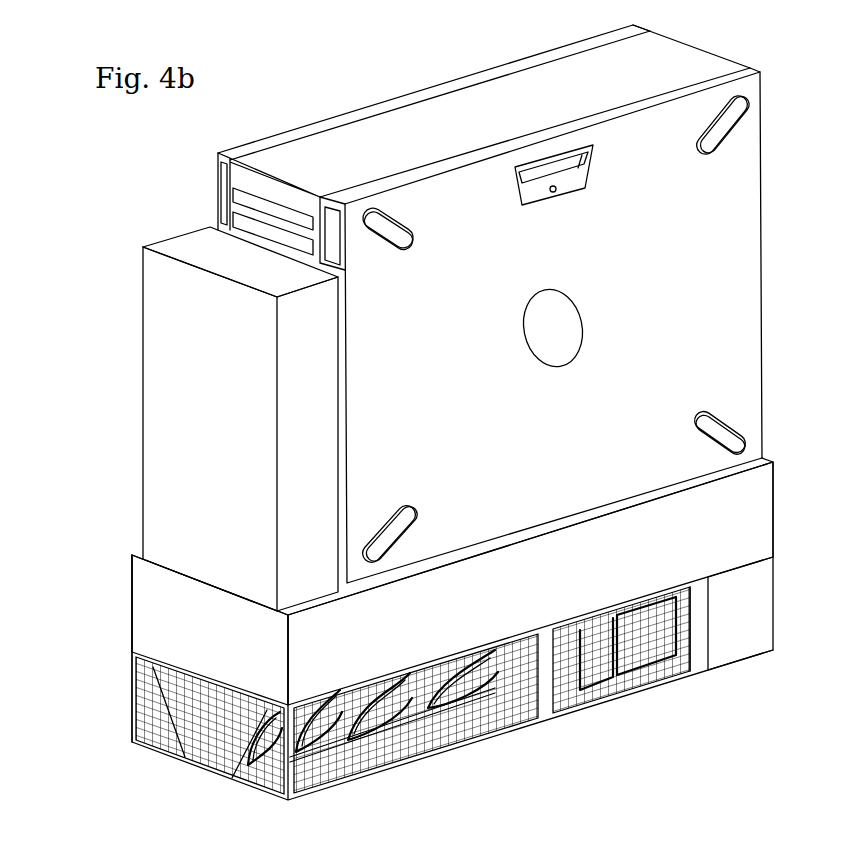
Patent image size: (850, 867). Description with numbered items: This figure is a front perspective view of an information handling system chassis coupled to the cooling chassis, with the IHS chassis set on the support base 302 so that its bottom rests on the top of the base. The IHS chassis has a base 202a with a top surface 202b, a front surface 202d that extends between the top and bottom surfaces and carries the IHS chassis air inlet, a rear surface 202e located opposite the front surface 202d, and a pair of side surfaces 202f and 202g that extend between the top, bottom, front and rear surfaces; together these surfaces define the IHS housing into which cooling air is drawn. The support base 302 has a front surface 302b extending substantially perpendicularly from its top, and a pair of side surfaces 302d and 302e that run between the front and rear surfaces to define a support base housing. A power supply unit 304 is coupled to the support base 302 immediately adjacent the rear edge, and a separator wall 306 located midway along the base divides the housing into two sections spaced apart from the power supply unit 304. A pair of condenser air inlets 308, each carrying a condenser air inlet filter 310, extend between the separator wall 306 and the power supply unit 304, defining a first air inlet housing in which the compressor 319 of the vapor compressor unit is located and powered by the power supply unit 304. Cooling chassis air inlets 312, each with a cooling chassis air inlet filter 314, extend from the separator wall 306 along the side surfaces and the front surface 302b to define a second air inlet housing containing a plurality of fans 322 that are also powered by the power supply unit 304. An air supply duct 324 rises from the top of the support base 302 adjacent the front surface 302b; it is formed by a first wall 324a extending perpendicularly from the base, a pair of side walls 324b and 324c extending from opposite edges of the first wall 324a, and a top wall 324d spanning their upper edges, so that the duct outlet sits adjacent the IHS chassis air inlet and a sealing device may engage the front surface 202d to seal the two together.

The base 202a is at (770, 160).
The top surface 202b is at (430, 115).
The front surface 202d is at (237, 180).
The rear surface 202e is at (764, 247).
The side surface 202f is at (758, 392).
The side surface 202g is at (326, 120).
The support base 302 is at (454, 629).
The front surface 302b is at (143, 615).
The side surface 302d is at (767, 517).
The side surface 302e is at (132, 577).
The power supply unit 304 is at (758, 625).
The separator wall 306 is at (550, 653).
The condenser air inlet 308 is at (694, 655).
The condenser air inlet filter 310 is at (662, 663).
The cooling chassis air inlet 312 is at (132, 698).
The cooling chassis air inlet filter 314 is at (158, 730).
The compressor 319 is at (593, 637).
The fans 322 is at (338, 708).
The air supply duct 324 is at (248, 403).
The first wall 324a is at (150, 417).
The side wall 324b is at (327, 433).
The side wall 324c is at (143, 275).
The top wall 324d is at (187, 243).